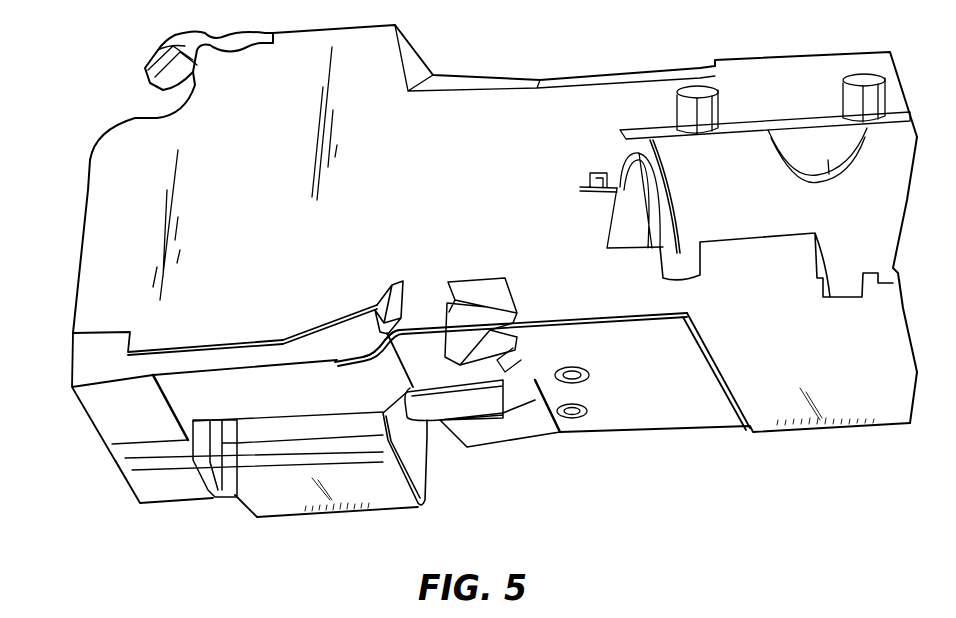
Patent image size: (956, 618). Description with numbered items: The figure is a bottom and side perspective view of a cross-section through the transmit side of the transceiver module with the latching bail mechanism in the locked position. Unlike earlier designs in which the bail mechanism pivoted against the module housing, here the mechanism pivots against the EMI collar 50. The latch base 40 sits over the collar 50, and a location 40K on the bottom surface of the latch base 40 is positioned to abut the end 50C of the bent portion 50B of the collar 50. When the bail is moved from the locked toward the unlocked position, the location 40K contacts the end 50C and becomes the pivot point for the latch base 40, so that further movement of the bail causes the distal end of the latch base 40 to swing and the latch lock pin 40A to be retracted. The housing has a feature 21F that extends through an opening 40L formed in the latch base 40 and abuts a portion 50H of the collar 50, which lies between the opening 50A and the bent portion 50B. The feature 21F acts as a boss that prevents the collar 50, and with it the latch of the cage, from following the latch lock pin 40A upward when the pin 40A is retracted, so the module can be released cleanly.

The latch base 40 is at (115, 377).
The latch lock pin 40A is at (477, 355).
The location on bottom surface of latch base 40K is at (334, 360).
The opening in latch base 40L is at (400, 330).
The feature of housing 21F is at (420, 320).
The EMI collar 50 is at (652, 412).
The opening in collar 50A is at (497, 365).
The bent portion of collar 50B is at (414, 385).
The end of bent portion 50C is at (368, 368).
The portion of collar 50H is at (430, 357).